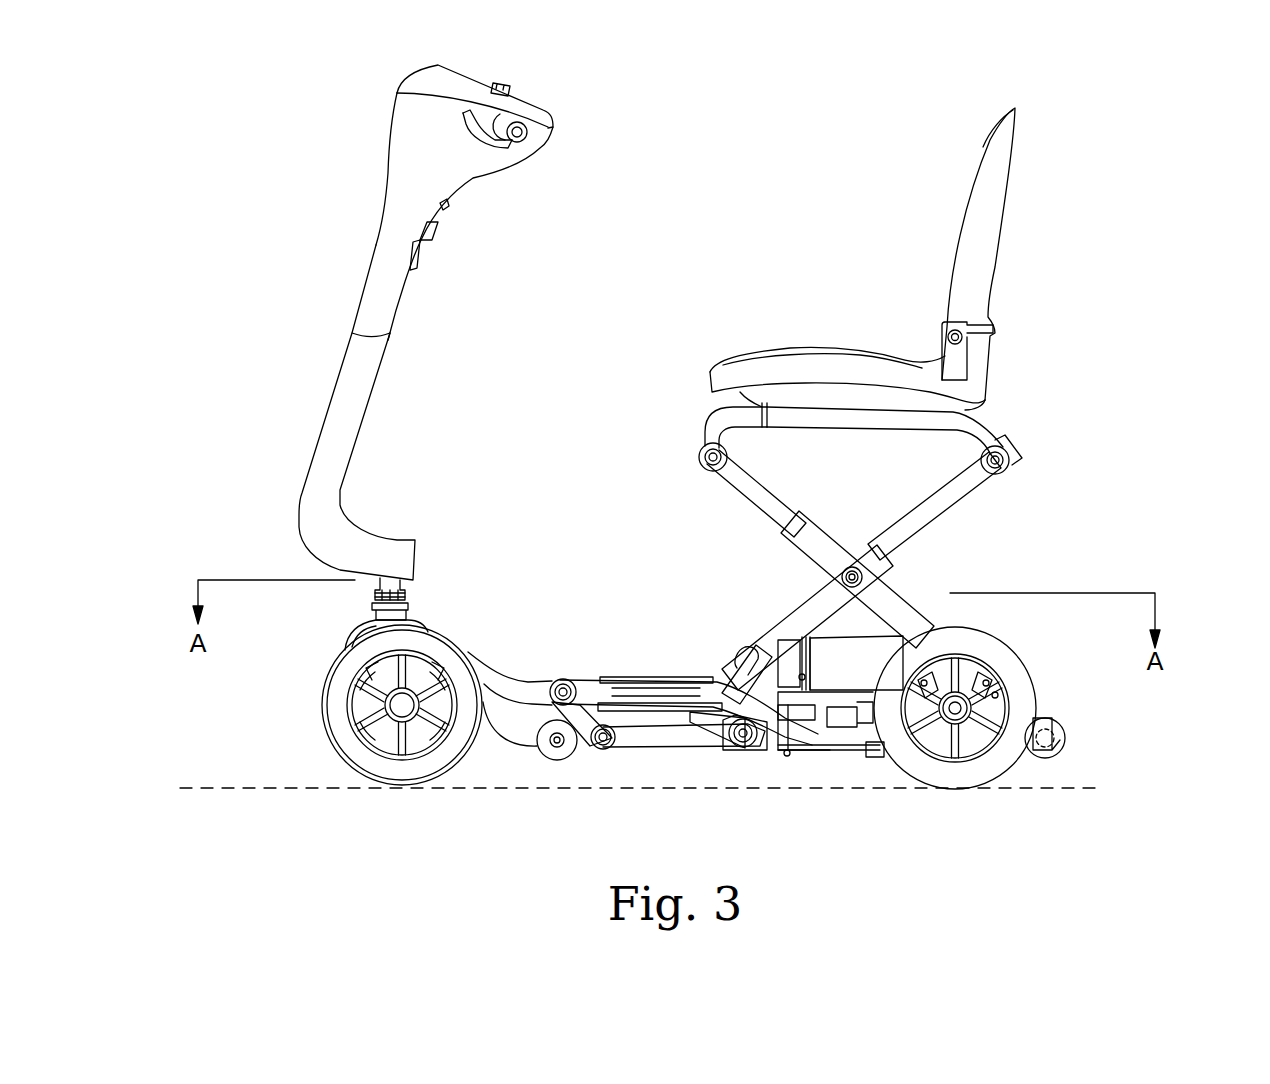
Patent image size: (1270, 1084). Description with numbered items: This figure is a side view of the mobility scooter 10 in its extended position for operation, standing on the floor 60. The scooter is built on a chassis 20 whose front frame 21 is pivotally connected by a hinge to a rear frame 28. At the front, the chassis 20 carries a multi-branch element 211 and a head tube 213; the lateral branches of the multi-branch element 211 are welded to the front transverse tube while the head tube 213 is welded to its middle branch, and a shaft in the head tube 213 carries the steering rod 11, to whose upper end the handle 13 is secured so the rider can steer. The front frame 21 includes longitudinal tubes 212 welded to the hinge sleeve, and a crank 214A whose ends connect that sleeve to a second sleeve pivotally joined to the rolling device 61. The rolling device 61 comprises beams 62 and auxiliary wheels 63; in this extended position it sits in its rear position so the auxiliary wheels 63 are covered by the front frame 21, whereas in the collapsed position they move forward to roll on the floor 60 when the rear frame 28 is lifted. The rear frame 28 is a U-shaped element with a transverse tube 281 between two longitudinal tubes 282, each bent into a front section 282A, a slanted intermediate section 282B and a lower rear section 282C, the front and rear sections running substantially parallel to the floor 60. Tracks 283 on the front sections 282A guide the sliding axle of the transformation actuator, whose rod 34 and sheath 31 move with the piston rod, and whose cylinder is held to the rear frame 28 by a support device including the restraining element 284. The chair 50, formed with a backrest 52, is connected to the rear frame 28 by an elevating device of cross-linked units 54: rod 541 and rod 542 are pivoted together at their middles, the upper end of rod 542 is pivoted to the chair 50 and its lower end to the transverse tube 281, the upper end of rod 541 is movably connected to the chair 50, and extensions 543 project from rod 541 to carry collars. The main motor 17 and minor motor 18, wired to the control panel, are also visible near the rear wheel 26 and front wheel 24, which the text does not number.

The mobility scooter 10 is at (343, 270).
The steering rod 11 is at (360, 372).
The handle 13 is at (530, 140).
The main motor 17 is at (860, 648).
The minor motor 18 is at (874, 756).
The chassis 20 is at (662, 646).
The front frame 21 is at (536, 666).
The front wheel 24 is at (353, 748).
The rear wheel 26 is at (1018, 685).
The rear frame 28 is at (686, 668).
The sheath 31 is at (857, 750).
The rod 34 is at (732, 722).
The chair 50 is at (835, 365).
The backrest 52 is at (993, 222).
The cross-linked unit 54 is at (947, 543).
The floor 60 is at (1100, 788).
The rolling device 61 is at (596, 750).
The beam 62 is at (628, 750).
The auxiliary wheel 63 is at (550, 752).
The multi-branch element 211 is at (365, 626).
The longitudinal tube 212 is at (493, 678).
The head tube 213 is at (395, 602).
The crank 214A is at (530, 720).
The transverse tube 281 is at (1065, 738).
The longitudinal tube 282 is at (690, 613).
The front section 282A is at (636, 688).
The intermediate section 282B is at (692, 700).
The rear section 282C is at (752, 642).
The track 283 is at (677, 713).
The restraining element 284 is at (808, 720).
The rod 541 is at (937, 500).
The rod 542 is at (738, 465).
The extension 543 is at (756, 742).